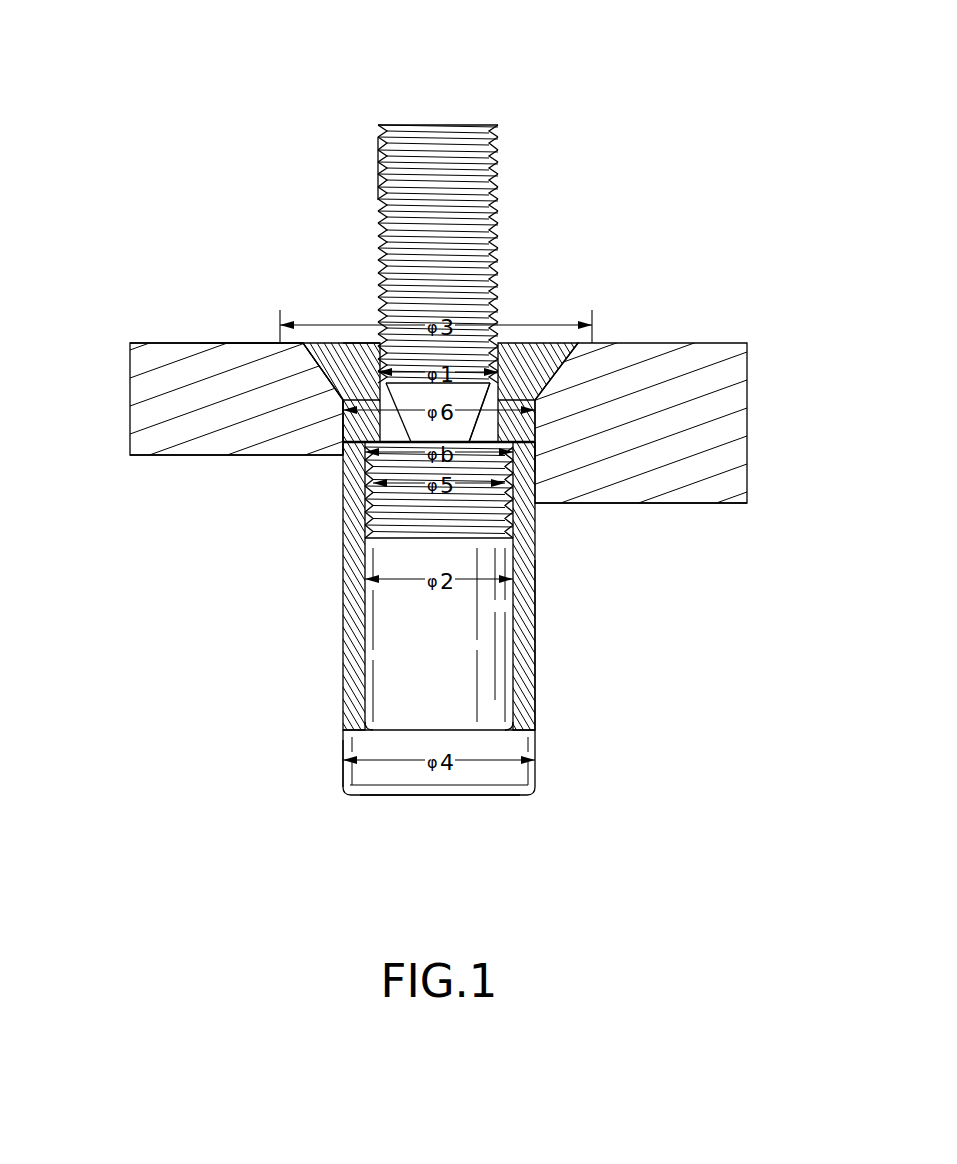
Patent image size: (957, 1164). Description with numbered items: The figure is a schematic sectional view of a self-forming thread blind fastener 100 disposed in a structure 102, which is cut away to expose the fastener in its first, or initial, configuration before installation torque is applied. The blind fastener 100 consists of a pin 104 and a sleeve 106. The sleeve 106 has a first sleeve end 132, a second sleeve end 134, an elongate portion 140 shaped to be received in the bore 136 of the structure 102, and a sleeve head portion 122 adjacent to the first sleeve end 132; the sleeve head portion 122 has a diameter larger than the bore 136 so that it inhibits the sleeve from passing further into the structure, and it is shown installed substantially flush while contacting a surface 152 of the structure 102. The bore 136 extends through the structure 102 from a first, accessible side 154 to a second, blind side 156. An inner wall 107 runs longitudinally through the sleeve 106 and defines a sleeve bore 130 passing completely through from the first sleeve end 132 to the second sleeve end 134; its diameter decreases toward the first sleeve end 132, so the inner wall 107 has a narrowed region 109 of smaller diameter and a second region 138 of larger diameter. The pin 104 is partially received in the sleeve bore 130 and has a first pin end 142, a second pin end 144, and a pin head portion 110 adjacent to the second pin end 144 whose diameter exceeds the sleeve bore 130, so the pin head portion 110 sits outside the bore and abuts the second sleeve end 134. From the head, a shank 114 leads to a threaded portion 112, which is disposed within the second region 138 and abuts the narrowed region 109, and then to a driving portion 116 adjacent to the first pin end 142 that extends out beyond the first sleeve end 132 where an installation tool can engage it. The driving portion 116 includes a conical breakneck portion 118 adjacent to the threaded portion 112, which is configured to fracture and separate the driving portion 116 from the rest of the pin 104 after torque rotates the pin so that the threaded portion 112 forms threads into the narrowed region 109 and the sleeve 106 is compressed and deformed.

The self-forming thread blind fastener 100 is at (600, 262).
The structure 102 is at (148, 420).
The pin 104 is at (493, 712).
The sleeve 106 is at (532, 512).
The inner wall 107 is at (385, 730).
The narrowed region 109 is at (533, 430).
The pin head portion 110 is at (480, 780).
The threaded portion 112 is at (430, 505).
The shank 114 is at (413, 657).
The driving portion 116 is at (442, 125).
The breakneck portion 118 is at (343, 432).
The sleeve head portion 122 is at (305, 357).
The sleeve bore 130 is at (493, 405).
The first sleeve end 132 is at (362, 343).
The second sleeve end 134 is at (385, 724).
The bore 136 is at (530, 453).
The second region 138 is at (525, 675).
The elongate portion 140 is at (530, 598).
The first pin end 142 is at (477, 124).
The second pin end 144 is at (520, 797).
The surface 152 is at (235, 343).
The first side 154 is at (170, 343).
The second side 156 is at (232, 457).